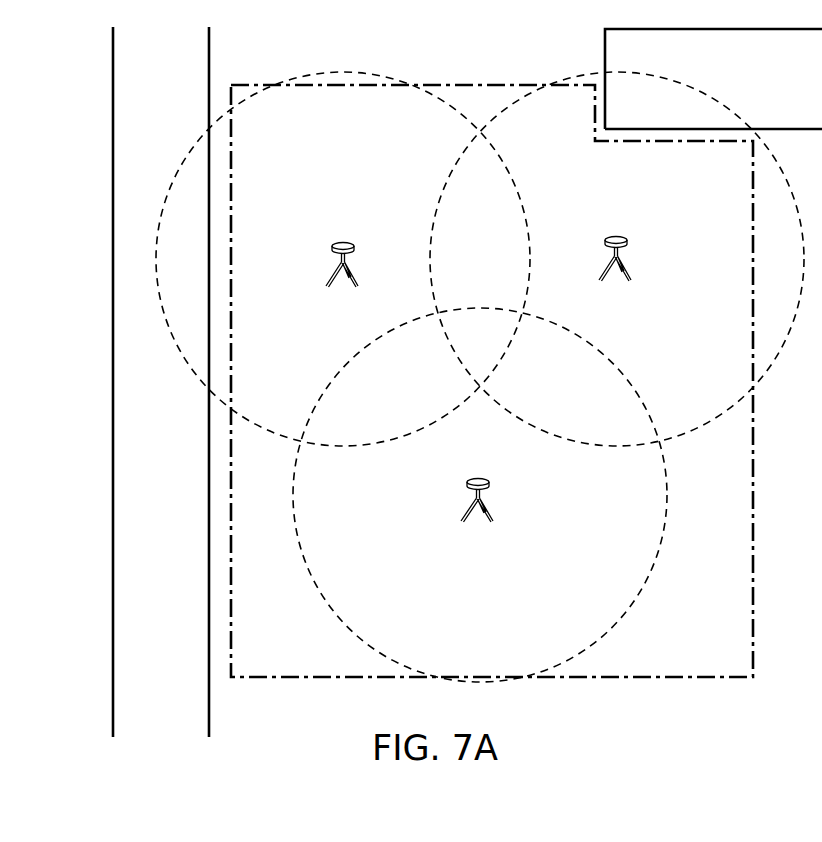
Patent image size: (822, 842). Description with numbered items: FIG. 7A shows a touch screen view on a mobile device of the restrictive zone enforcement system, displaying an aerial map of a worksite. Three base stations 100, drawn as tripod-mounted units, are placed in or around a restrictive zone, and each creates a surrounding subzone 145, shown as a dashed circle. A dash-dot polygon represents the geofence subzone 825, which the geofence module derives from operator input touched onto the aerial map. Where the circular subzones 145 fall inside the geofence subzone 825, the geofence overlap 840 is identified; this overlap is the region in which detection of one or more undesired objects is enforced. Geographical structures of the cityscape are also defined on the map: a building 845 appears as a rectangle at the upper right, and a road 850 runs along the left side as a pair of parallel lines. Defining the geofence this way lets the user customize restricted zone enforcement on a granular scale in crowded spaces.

The base station 100 is at (337, 228).
The subzone 145 is at (407, 156).
The geofence subzone 825 is at (727, 614).
The geofence overlap 840 is at (306, 343).
The building 845 is at (797, 88).
The road 850 is at (185, 569).